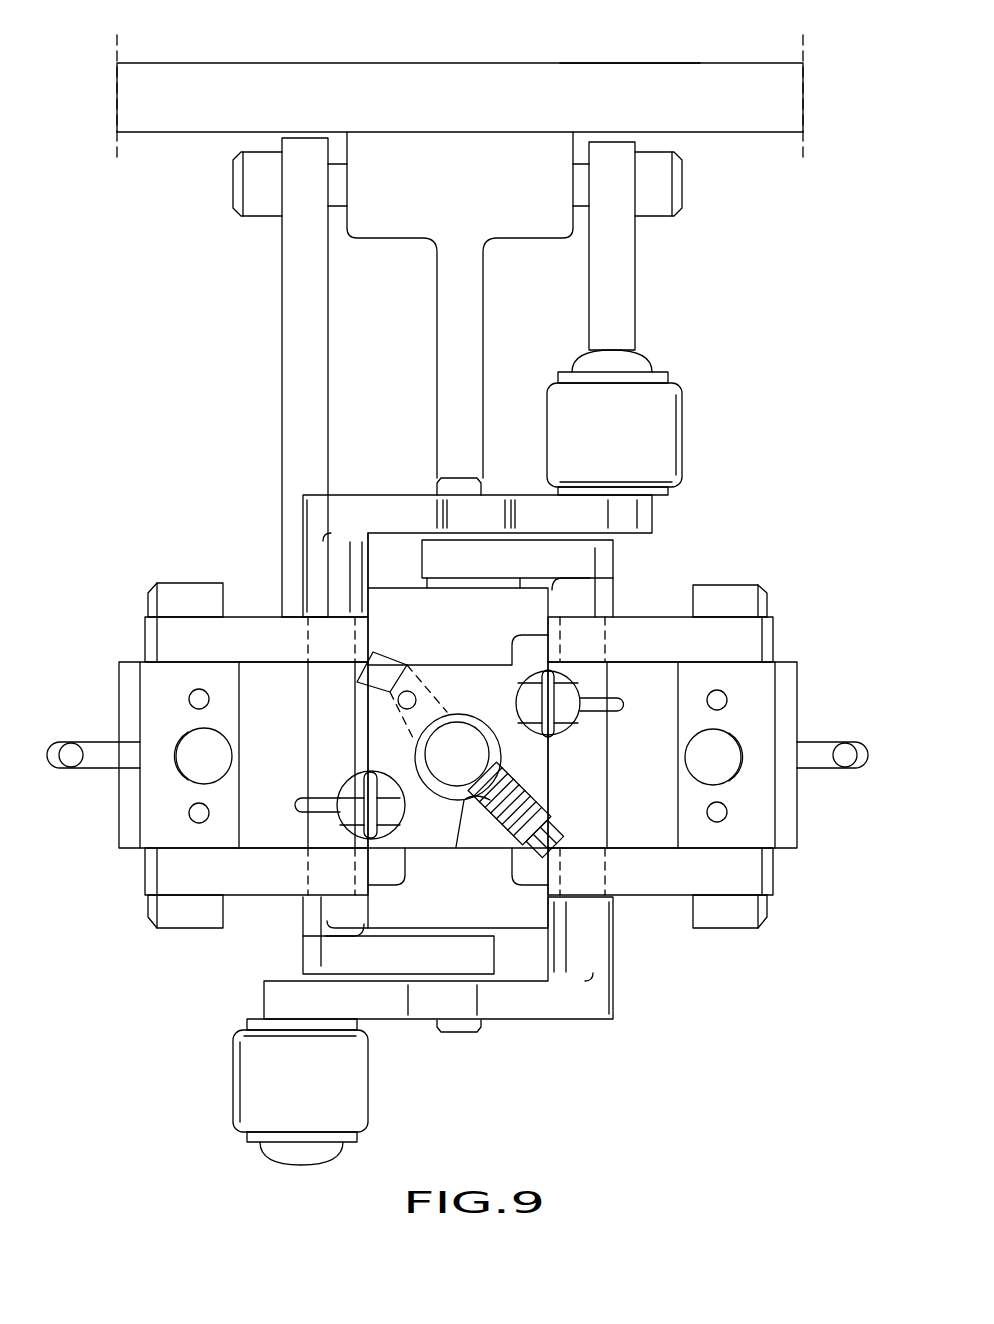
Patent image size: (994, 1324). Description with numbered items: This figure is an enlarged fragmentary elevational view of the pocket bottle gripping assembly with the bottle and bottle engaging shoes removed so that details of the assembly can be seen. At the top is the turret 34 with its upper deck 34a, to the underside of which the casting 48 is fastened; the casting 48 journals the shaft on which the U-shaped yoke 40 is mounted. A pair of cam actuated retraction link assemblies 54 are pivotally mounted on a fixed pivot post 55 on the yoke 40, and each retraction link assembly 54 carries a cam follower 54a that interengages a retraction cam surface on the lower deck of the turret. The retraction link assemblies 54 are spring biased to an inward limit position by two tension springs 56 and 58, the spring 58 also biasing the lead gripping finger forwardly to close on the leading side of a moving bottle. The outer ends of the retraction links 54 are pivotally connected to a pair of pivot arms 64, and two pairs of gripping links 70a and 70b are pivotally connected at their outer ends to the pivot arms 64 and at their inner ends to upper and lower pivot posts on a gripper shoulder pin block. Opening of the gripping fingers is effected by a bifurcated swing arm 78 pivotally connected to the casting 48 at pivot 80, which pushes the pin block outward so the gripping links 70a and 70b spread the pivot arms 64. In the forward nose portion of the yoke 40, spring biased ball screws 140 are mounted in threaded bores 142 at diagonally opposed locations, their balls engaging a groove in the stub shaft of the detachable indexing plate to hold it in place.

The turret 34 is at (339, 74).
The upper deck 34a is at (638, 42).
The yoke 40 is at (480, 630).
The casting 48 is at (485, 199).
The retraction link assembly 54 is at (397, 503).
The cam follower 54a is at (683, 428).
The pivot post 55 is at (465, 478).
The tension spring 56 is at (337, 794).
The tension spring 58 is at (600, 737).
The pivot arm 64 is at (121, 668).
The gripping link 70a is at (267, 623).
The gripping link 70b is at (262, 884).
The bifurcated swing arm 78 is at (282, 299).
The pivot 80 is at (237, 179).
The spring biased ball screw 140 is at (388, 656).
The threaded bore 142 is at (497, 838).